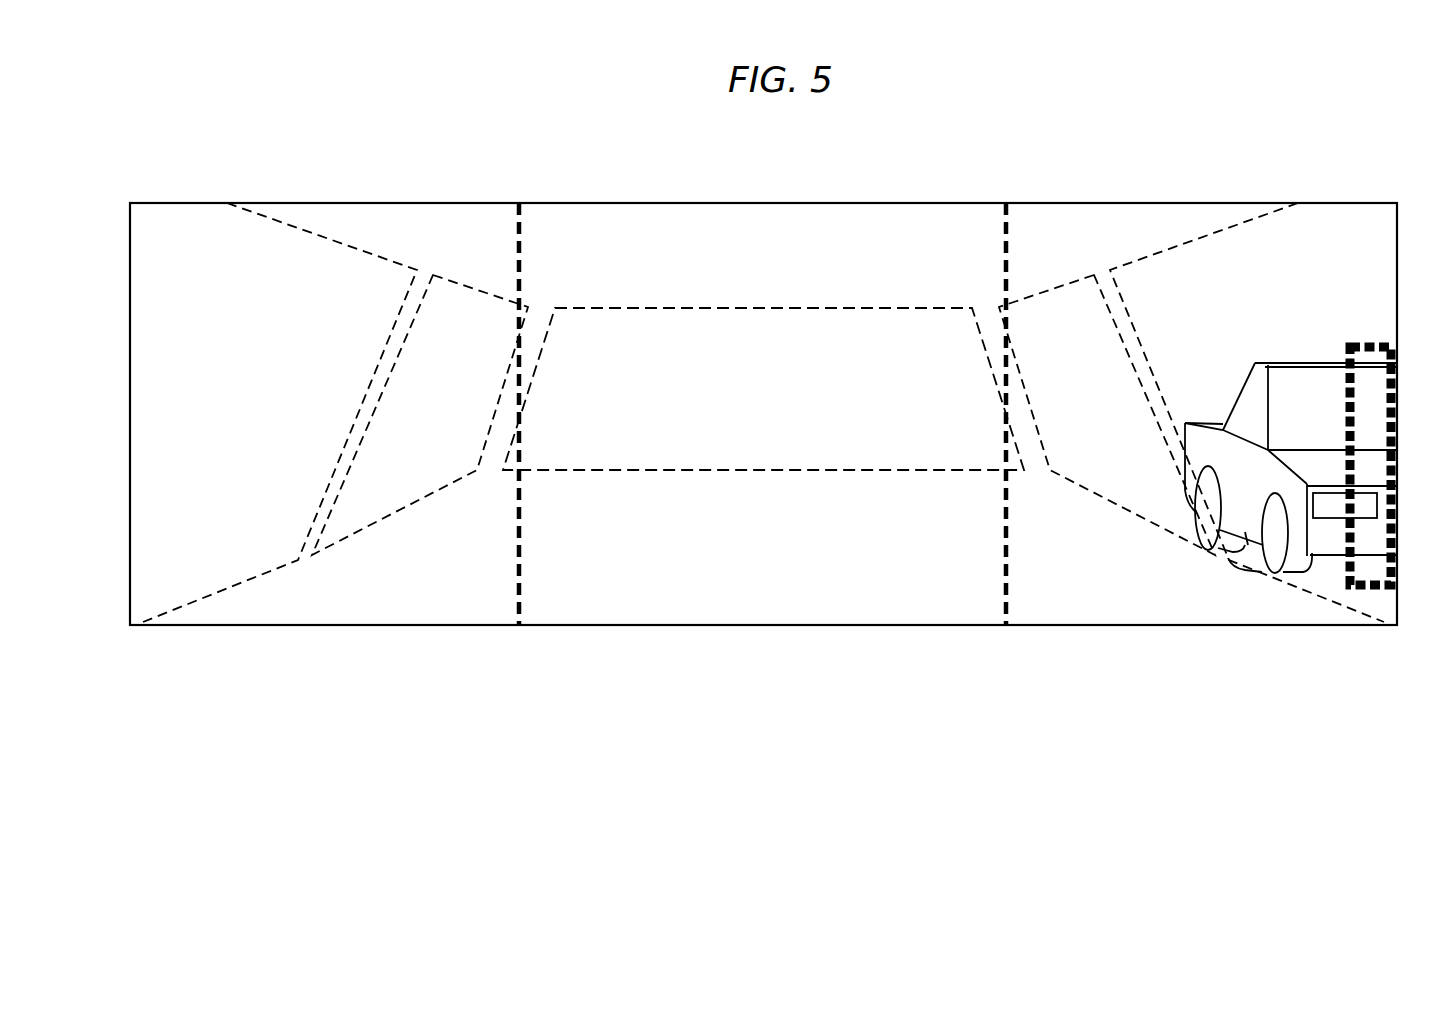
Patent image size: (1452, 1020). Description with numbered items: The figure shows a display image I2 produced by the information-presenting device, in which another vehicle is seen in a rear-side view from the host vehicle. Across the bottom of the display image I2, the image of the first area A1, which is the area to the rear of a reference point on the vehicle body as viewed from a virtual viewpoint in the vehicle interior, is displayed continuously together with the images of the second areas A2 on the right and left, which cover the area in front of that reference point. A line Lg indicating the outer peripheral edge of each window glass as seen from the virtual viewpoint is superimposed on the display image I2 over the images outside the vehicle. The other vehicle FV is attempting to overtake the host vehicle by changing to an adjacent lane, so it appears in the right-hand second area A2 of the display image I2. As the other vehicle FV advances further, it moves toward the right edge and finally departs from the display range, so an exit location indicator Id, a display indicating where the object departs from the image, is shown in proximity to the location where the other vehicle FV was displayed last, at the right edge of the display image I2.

The display image I2 is at (203, 188).
The line indicating the outer peripheral edge of each window glass Lg is at (621, 308).
The other vehicle FV is at (1295, 362).
The exit location indicator Id is at (1372, 342).
The first area A1 is at (1006, 650).
The second area A2 is at (519, 650).